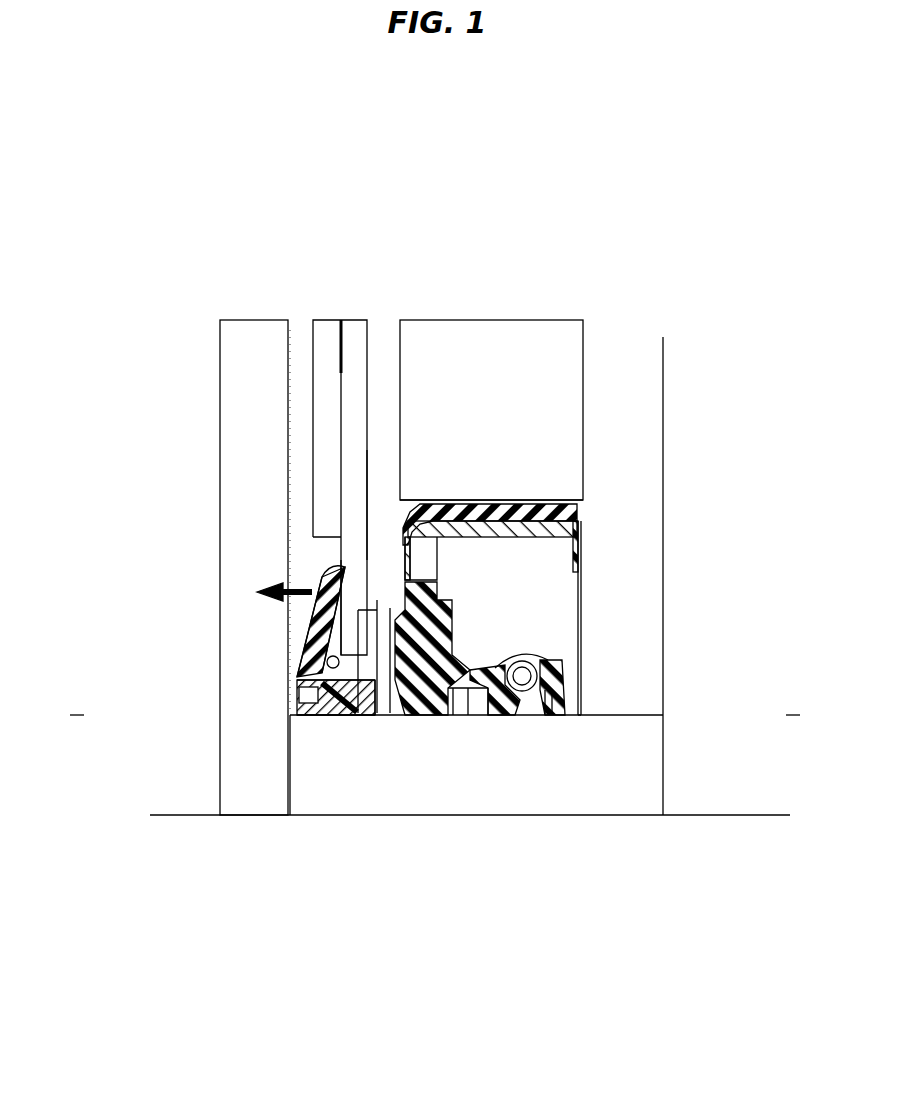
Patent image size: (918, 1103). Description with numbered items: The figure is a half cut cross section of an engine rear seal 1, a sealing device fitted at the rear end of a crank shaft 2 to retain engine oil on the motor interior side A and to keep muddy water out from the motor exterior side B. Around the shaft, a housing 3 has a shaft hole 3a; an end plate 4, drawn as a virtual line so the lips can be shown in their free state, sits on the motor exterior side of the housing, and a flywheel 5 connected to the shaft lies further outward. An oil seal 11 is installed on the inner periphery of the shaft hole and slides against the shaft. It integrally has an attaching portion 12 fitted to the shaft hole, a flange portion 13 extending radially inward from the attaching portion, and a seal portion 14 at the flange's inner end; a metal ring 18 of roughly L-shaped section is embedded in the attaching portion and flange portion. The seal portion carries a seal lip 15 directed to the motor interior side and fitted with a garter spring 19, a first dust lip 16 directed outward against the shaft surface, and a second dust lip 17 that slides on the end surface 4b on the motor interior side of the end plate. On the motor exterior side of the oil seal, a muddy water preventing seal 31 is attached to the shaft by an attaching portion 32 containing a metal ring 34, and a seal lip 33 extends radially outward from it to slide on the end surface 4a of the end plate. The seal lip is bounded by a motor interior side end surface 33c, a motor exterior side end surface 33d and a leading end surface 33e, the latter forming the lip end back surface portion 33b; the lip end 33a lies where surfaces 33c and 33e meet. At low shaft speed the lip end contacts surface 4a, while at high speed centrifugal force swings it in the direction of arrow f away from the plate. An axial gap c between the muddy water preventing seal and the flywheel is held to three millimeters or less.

The engine rear seal 1 is at (441, 570).
The crank shaft 2 is at (602, 797).
The housing 3 is at (475, 338).
The shaft hole 3a is at (555, 511).
The end plate 4 is at (352, 330).
The end surface in the motor exterior side of the end plate 4a is at (343, 555).
The end surface in the motor interior side of the end plate 4b is at (367, 470).
The flywheel 5 is at (253, 333).
The axial gap c is at (302, 335).
The arrow f is at (278, 593).
The oil seal 11 is at (575, 600).
The attaching portion 12 is at (522, 512).
The flange portion 13 is at (447, 582).
The seal portion 14 is at (460, 715).
The seal lip 15 is at (512, 715).
The first dust lip 16 is at (420, 715).
The second dust lip 17 is at (383, 718).
The metal ring 18 is at (515, 533).
The garter spring 19 is at (541, 652).
The muddy water preventing seal 31 is at (356, 722).
The attaching portion 32 is at (338, 715).
The seal lip 33 is at (312, 622).
The lip end 33a is at (347, 567).
The lip end back surface portion 33b is at (335, 570).
The motor interior side end surface 33c is at (318, 672).
The motor exterior side end surface 33d is at (320, 645).
The leading end surface 33e is at (322, 577).
The metal ring 34 is at (320, 715).
The motor interior side A is at (793, 706).
The motor exterior side B is at (77, 706).